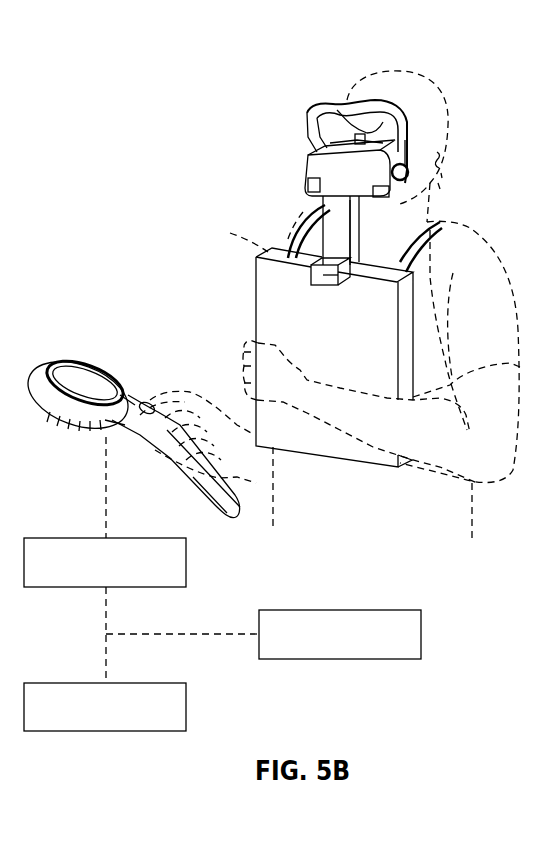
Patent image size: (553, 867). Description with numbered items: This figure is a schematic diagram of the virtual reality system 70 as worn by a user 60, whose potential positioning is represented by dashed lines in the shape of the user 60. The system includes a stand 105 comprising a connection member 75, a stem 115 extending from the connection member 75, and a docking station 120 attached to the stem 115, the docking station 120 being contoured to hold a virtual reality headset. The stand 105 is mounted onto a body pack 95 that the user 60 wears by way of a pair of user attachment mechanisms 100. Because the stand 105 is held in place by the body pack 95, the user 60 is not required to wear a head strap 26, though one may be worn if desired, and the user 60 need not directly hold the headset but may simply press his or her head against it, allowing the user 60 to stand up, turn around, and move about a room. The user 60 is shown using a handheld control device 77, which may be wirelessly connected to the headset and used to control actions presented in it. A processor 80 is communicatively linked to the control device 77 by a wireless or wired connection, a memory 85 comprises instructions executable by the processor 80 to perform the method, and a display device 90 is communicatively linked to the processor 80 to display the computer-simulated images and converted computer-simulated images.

The user 60 is at (420, 73).
The head strap 26 is at (355, 110).
The virtual reality system 70 is at (300, 183).
The docking station 120 is at (443, 155).
The user attachment mechanism 100 is at (320, 212).
The body pack 95 is at (257, 300).
The stand 105 is at (298, 274).
The connection member 75 is at (322, 276).
The stem 115 is at (360, 245).
The handheld control device 77 is at (27, 383).
The processor 80 is at (73, 538).
The memory 85 is at (73, 683).
The display device 90 is at (308, 610).